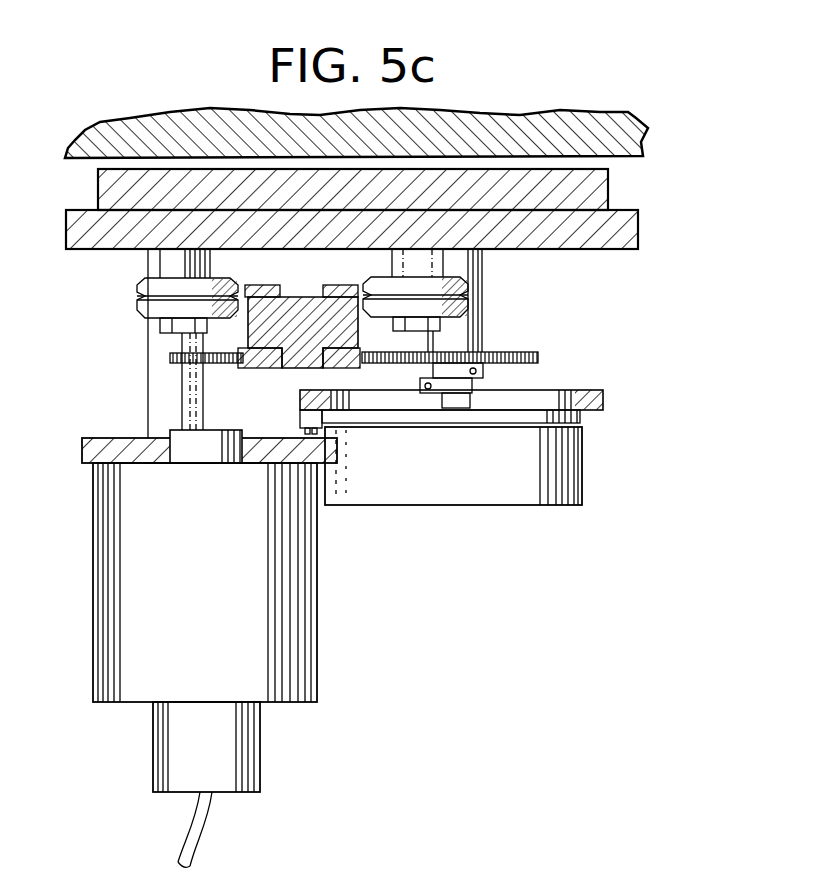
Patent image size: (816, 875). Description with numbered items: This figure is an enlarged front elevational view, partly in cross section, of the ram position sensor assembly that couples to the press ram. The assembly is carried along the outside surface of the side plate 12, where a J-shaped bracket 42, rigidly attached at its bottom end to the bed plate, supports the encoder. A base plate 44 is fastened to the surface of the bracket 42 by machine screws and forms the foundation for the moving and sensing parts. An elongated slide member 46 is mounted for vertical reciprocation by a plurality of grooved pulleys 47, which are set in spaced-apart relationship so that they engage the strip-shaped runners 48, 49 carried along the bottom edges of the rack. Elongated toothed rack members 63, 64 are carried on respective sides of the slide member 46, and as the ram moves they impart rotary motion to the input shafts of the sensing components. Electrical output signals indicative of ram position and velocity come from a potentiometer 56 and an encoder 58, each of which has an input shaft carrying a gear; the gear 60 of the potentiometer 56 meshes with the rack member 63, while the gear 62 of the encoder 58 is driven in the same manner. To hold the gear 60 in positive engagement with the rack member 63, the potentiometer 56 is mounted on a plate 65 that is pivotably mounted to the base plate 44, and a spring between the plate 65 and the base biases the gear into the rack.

The side plate 12 is at (622, 134).
The J-shaped bracket 42 is at (603, 187).
The base plate 44 is at (633, 224).
The elongated slide member 46 is at (303, 308).
The grooved pulleys 47 is at (140, 289).
The strip-shaped runner 48 is at (276, 286).
The strip-shaped runner 49 is at (348, 278).
The potentiometer 56 is at (482, 492).
The encoder 58 is at (306, 634).
The gear 60 is at (539, 358).
The gear 62 is at (172, 358).
The toothed rack member 63 is at (340, 363).
The toothed rack member 64 is at (262, 370).
The plate 65 is at (605, 395).